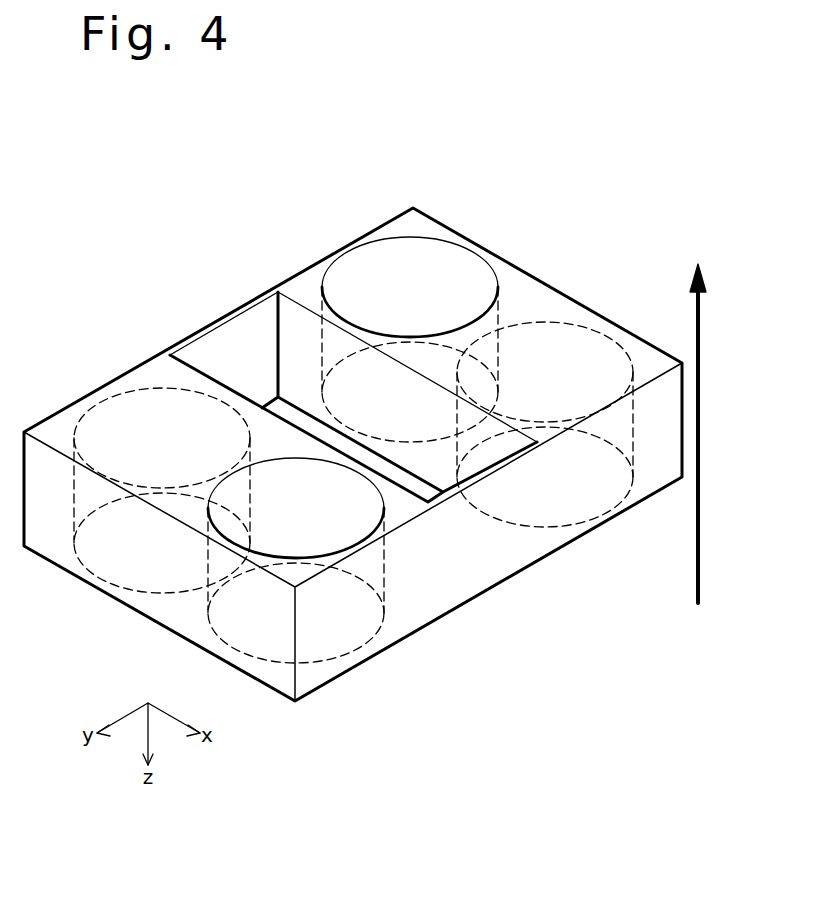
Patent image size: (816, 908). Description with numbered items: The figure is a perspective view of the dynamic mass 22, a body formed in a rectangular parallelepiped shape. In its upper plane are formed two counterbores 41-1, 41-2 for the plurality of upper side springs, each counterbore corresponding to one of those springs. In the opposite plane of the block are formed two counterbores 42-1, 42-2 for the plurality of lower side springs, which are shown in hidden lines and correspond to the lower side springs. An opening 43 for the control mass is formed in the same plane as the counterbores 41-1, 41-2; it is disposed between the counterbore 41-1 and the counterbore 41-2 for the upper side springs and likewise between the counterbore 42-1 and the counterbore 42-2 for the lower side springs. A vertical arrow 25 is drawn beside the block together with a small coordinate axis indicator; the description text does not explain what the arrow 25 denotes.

The dynamic mass 22 is at (131, 246).
The direction arrow 25 is at (694, 328).
The counterbore for the upper side spring 41-1 is at (447, 252).
The counterbore for the upper side spring 41-2 is at (353, 533).
The counterbore for the lower side spring 42-1 is at (568, 515).
The counterbore for the lower side spring 42-2 is at (138, 582).
The opening for the control mass 43 is at (242, 339).